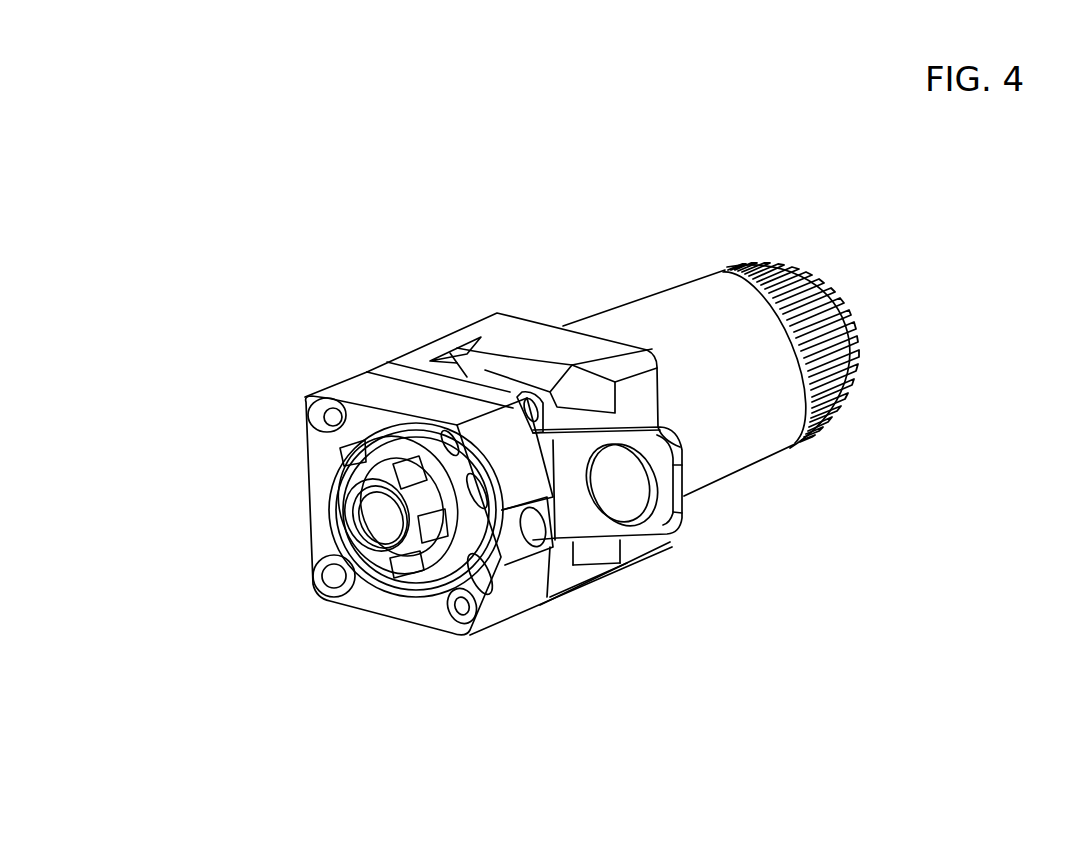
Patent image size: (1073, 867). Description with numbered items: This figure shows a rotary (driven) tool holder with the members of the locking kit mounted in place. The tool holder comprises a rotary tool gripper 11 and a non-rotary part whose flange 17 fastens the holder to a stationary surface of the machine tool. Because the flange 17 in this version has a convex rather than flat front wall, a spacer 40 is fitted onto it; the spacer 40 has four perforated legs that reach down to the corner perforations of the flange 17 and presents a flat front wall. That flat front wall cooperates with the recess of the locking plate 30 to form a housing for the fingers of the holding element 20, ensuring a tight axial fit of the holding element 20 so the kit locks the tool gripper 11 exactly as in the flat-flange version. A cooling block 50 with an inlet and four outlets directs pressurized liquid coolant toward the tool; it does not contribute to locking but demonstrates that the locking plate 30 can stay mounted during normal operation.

The rotary tool gripper 11 is at (388, 560).
The flange 17 is at (528, 345).
The holding element 20 is at (576, 548).
The locking plate 30 is at (412, 374).
The spacer 40 is at (464, 378).
The cooling block 50 is at (382, 395).